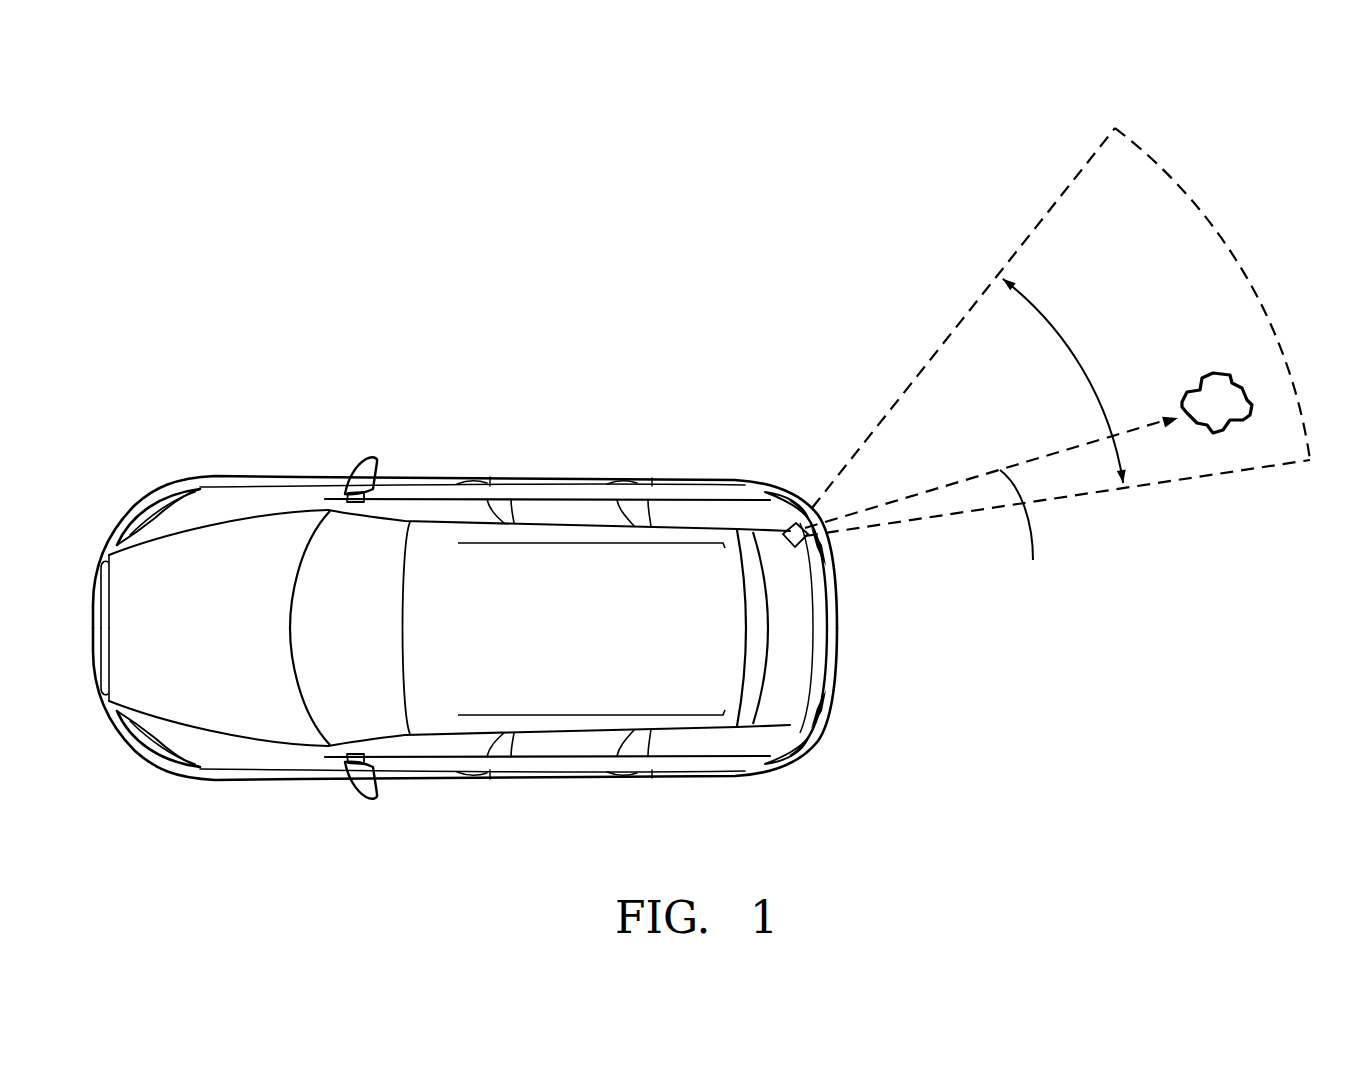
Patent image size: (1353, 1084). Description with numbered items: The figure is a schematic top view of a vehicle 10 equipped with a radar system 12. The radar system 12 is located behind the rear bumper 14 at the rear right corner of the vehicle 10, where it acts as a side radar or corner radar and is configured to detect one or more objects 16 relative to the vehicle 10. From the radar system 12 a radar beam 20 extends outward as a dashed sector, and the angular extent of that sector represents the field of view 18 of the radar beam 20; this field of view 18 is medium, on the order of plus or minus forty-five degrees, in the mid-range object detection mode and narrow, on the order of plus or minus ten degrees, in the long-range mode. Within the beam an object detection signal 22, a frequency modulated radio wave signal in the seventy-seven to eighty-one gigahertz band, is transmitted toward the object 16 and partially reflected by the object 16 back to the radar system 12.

The vehicle 10 is at (738, 213).
The radar system 12 is at (808, 477).
The rear bumper 14 is at (490, 568).
The object 16 is at (1240, 383).
The field of view 18 is at (1080, 363).
The radar beam 20 is at (1050, 207).
The object detection signal 22 is at (991, 504).